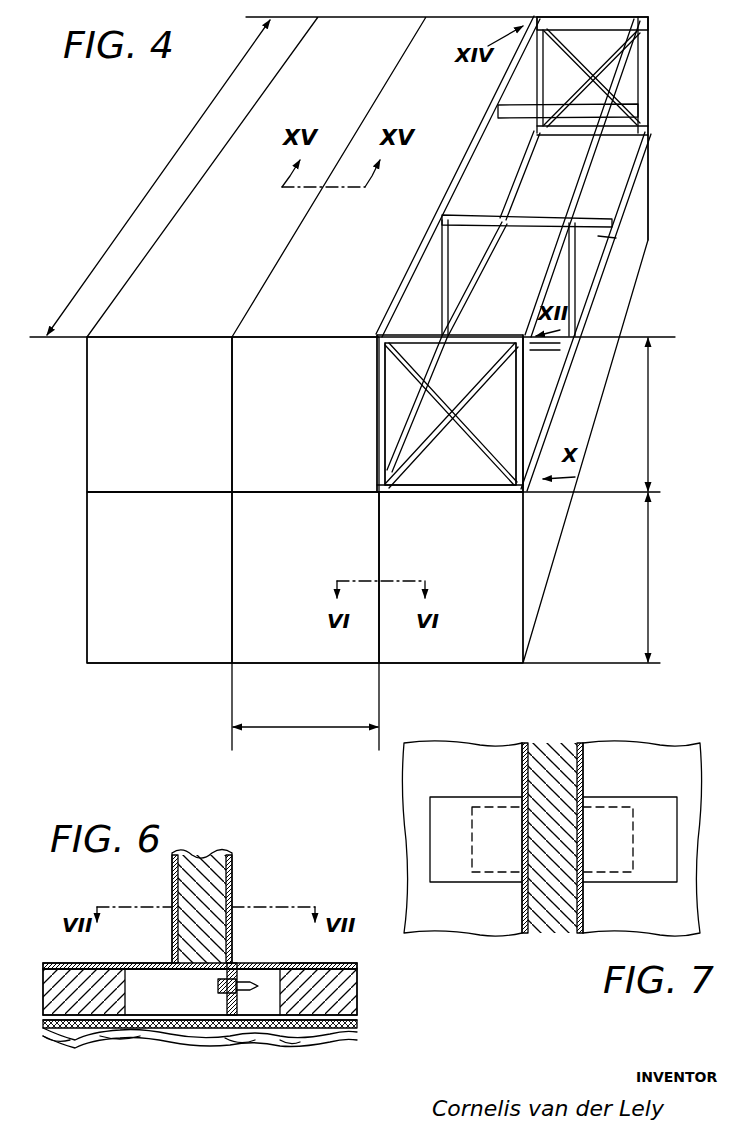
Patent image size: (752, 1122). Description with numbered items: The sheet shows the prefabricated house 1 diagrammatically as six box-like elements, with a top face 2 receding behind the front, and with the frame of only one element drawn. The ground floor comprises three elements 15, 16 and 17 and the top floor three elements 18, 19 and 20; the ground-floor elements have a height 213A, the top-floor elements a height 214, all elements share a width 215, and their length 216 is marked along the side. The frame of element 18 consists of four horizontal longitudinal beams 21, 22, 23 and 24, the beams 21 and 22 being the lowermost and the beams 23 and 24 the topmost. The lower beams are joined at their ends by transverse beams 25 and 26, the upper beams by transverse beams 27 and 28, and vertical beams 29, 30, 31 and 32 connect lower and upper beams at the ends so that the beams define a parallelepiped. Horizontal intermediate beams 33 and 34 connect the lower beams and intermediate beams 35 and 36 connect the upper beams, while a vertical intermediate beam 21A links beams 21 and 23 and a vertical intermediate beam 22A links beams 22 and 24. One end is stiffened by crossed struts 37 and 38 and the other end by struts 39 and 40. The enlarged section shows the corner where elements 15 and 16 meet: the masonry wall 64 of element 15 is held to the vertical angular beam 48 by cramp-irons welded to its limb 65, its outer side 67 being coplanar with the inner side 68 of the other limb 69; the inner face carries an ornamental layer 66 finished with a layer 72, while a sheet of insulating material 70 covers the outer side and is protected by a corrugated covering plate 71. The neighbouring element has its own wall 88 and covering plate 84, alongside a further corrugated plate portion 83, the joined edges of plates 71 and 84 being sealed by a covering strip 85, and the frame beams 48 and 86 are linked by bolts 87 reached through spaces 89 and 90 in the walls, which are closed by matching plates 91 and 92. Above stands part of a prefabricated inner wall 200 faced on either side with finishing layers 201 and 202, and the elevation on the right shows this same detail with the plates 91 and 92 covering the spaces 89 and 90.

In FIG. 4, the frame / plate 1 is at (86, 572).
In FIG. 4, the top surface of plate 2 is at (87, 364).
In FIG. 4, the element 15 is at (466, 664).
In FIG. 6, the element 15 is at (360, 999).
In FIG. 4, the element 16 is at (302, 664).
In FIG. 4, the element 17 is at (167, 664).
In FIG. 4, the element 18 is at (424, 494).
In FIG. 4, the element 19 is at (297, 494).
In FIG. 4, the element 20 is at (163, 494).
In FIG. 4, the horizontal beam 21 is at (588, 303).
In FIG. 4, the vertical intermediate beam 21A is at (575, 272).
In FIG. 4, the horizontal beam 22 is at (525, 198).
In FIG. 4, the vertical intermediate beam 22A is at (462, 272).
In FIG. 4, the horizontal beam 23 is at (592, 178).
In FIG. 4, the horizontal beam 24 is at (456, 178).
In FIG. 4, the transverse beam 25 is at (482, 488).
In FIG. 4, the transverse beam 26 is at (622, 136).
In FIG. 4, the transverse beam 27 is at (434, 330).
In FIG. 4, the transverse beam 28 is at (583, 18).
In FIG. 4, the vertical beam 29 is at (518, 420).
In FIG. 4, the vertical beam 30 is at (377, 406).
In FIG. 4, the vertical beam 31 is at (648, 76).
In FIG. 4, the vertical beam 32 is at (536, 70).
In FIG. 4, the intermediate beam 33 is at (556, 348).
In FIG. 4, the intermediate beam 34 is at (600, 239).
In FIG. 4, the intermediate beam 35 is at (455, 213).
In FIG. 4, the intermediate beam 36 is at (505, 118).
In FIG. 4, the strut 37 is at (436, 436).
In FIG. 4, the strut 38 is at (468, 438).
In FIG. 4, the strut 39 is at (582, 88).
In FIG. 4, the strut 40 is at (564, 62).
In FIG. 6, the vertical angular beam 48 is at (302, 1044).
In FIG. 6, the wall 64 is at (362, 984).
In FIG. 6, the limb 65 is at (236, 964).
In FIG. 6, the layer 66 is at (360, 969).
In FIG. 6, the outer side 67 is at (360, 1024).
In FIG. 6, the inner side 68 is at (318, 992).
In FIG. 6, the limb 69 is at (284, 1026).
In FIG. 6, the sheet of insulating material 70 is at (360, 1034).
In FIG. 6, the covering plate 71 is at (346, 1046).
In FIG. 6, the layer 72 is at (352, 964).
In FIG. 6, the corrugation 83 is at (72, 1046).
In FIG. 6, the covering plate 84 is at (130, 1044).
In FIG. 6, the covering strip 85 is at (240, 1046).
In FIG. 6, the frame beam 86 is at (186, 1014).
In FIG. 6, the bolt 87 is at (219, 986).
In FIG. 6, the wall 88 is at (58, 993).
In FIG. 6, the space 89 is at (264, 972).
In FIG. 7, the space 89 is at (511, 866).
In FIG. 6, the space 90 is at (160, 970).
In FIG. 7, the space 90 is at (600, 852).
In FIG. 6, the plate 91 is at (288, 966).
In FIG. 7, the plate 91 is at (450, 805).
In FIG. 6, the plate 92 is at (132, 965).
In FIG. 7, the plate 92 is at (655, 812).
In FIG. 6, the inner wall 200 is at (200, 858).
In FIG. 7, the inner wall 200 is at (557, 746).
In FIG. 6, the layer 201 is at (172, 886).
In FIG. 7, the layer 201 is at (580, 934).
In FIG. 6, the layer 202 is at (232, 896).
In FIG. 7, the layer 202 is at (525, 934).
In FIG. 4, the height 213A is at (668, 577).
In FIG. 4, the height 214 is at (665, 414).
In FIG. 4, the width 215 is at (324, 732).
In FIG. 4, the length 216 is at (232, 208).